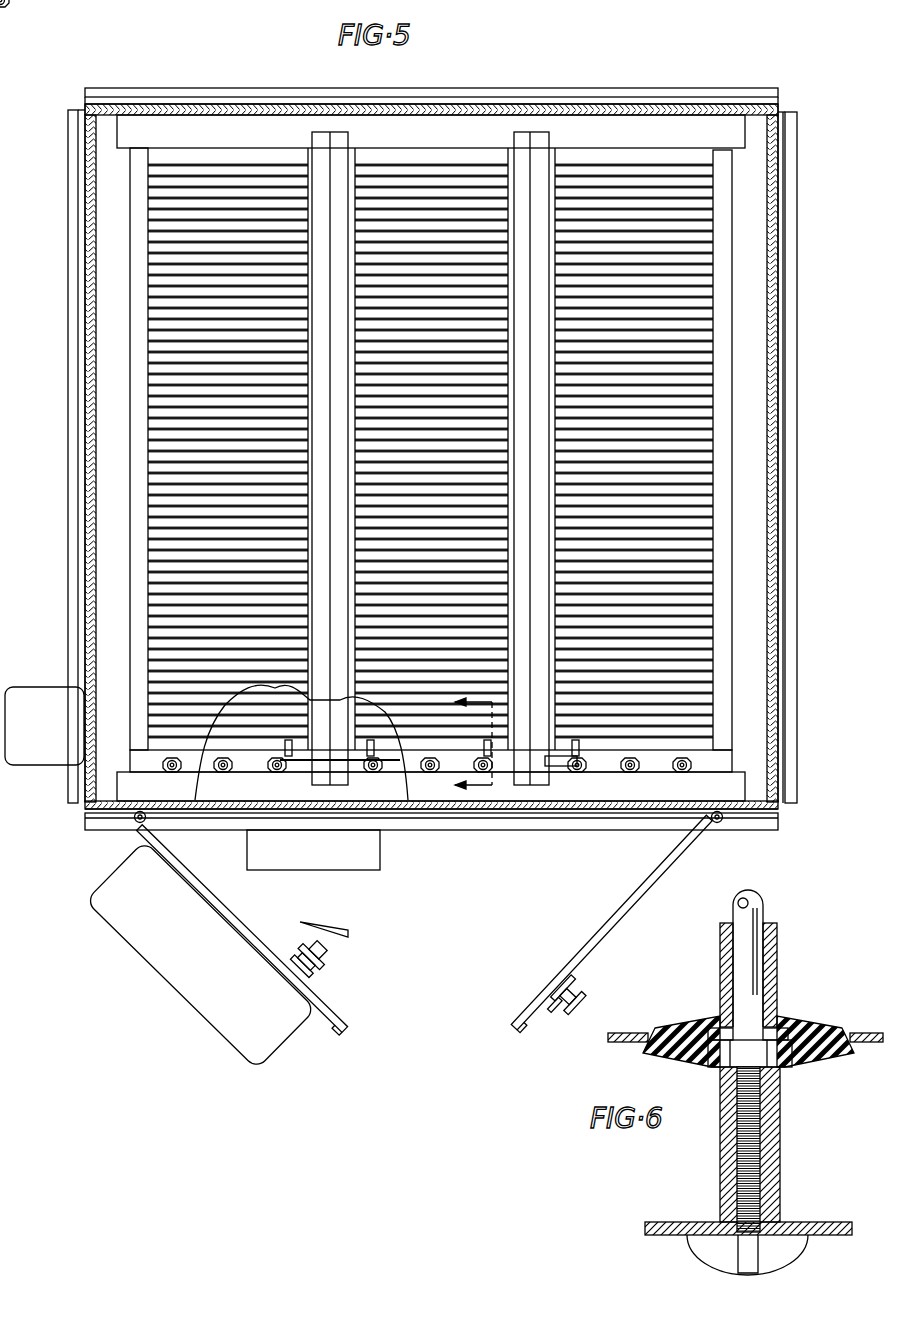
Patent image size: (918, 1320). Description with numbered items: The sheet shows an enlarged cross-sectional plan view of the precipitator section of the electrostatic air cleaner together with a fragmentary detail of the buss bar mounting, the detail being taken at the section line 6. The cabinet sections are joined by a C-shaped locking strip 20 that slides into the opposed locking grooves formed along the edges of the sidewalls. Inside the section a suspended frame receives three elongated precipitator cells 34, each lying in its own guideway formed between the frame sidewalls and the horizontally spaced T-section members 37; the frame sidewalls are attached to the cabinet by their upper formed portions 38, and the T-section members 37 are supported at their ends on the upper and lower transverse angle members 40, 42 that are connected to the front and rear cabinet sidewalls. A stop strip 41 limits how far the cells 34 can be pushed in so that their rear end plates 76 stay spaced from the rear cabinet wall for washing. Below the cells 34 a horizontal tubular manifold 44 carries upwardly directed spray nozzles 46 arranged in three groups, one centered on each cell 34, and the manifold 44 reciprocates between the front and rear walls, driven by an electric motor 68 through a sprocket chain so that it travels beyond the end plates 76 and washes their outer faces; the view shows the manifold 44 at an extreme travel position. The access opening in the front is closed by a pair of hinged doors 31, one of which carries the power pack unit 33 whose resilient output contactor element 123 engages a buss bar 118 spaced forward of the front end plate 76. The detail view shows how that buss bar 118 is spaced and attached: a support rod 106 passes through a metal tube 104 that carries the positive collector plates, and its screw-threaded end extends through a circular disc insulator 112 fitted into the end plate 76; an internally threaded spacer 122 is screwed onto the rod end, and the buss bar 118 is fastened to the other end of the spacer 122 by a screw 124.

In FIG. 5, the locking strip 20 is at (548, 88).
In FIG. 5, the upper transverse angle member 40 is at (672, 118).
In FIG. 5, the stop strip 41 is at (174, 158).
In FIG. 5, the precipitator cell 34 is at (217, 208).
In FIG. 5, the T-section member 37 is at (316, 140).
In FIG. 5, the end plate 76 is at (698, 170).
In FIG. 6, the end plate 76 is at (641, 1044).
In FIG. 5, the horizontally formed portion 38 is at (752, 306).
In FIG. 5, the lower transverse angle member 42 is at (542, 801).
In FIG. 5, the spray nozzle 46 is at (638, 770).
In FIG. 5, the buss bar 118 is at (556, 770).
In FIG. 6, the buss bar 118 is at (700, 1222).
In FIG. 5, the tubular manifold 44 is at (250, 763).
In FIG. 5, the section line 6 is at (462, 745).
In FIG. 5, the electric motor 68 is at (380, 863).
In FIG. 5, the hinged door 31 is at (236, 912).
In FIG. 5, the resilient output contactor element 123 is at (333, 932).
In FIG. 5, the power pack unit 33 is at (272, 1046).
In FIG. 6, the support rod 106 is at (765, 913).
In FIG. 6, the metal tube 104 is at (775, 967).
In FIG. 6, the circular disc insulator 112 is at (790, 1018).
In FIG. 6, the internally threaded spacer 122 is at (778, 1128).
In FIG. 6, the screw 124 is at (799, 1256).